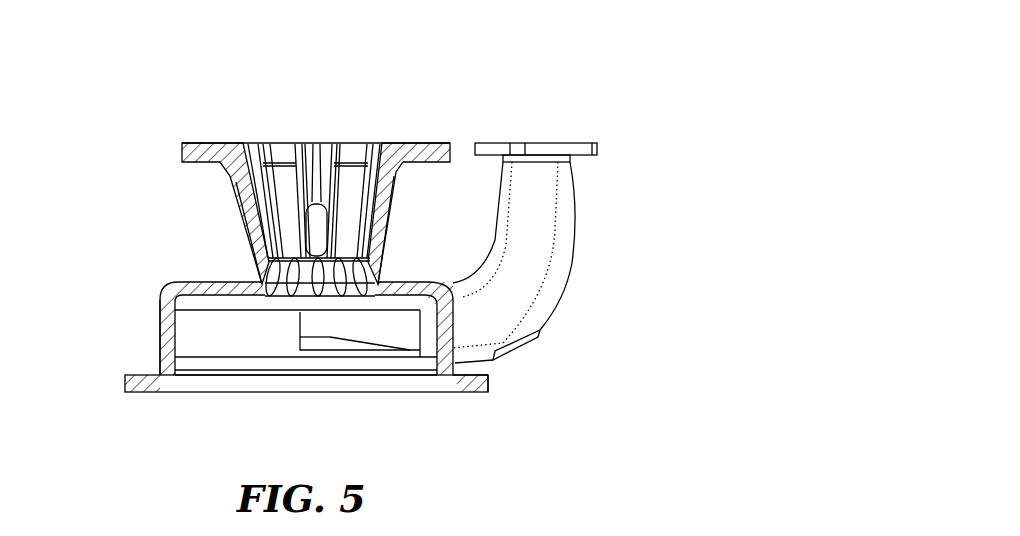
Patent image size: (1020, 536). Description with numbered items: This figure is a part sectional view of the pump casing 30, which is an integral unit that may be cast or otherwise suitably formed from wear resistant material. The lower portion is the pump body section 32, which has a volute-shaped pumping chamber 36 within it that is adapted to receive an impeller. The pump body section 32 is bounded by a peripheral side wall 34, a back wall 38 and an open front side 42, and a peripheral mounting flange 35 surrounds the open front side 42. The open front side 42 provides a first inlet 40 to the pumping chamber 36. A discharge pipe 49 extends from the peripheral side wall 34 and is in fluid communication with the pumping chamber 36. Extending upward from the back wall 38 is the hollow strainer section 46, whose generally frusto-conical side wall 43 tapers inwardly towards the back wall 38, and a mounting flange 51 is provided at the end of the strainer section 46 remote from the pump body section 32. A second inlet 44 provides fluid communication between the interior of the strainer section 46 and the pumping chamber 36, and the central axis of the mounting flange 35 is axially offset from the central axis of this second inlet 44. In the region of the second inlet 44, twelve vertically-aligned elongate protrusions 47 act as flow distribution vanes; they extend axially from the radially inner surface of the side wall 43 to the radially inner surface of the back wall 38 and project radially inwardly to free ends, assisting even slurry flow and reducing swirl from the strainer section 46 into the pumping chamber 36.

The pump casing 30 is at (354, 112).
The pump body section 32 is at (196, 270).
The peripheral side wall 34 is at (158, 363).
The peripheral mounting flange 35 is at (472, 392).
The pumping chamber 36 is at (197, 325).
The back wall 38 is at (386, 277).
The first inlet 40 is at (250, 392).
The open front side 42 is at (430, 382).
The frusto-conical side wall 43 is at (388, 195).
The second inlet 44 is at (300, 310).
The strainer section 46 is at (224, 183).
The elongate protrusions 47 is at (300, 294).
The discharge pipe 49 is at (565, 217).
The mounting flange 51 is at (430, 150).